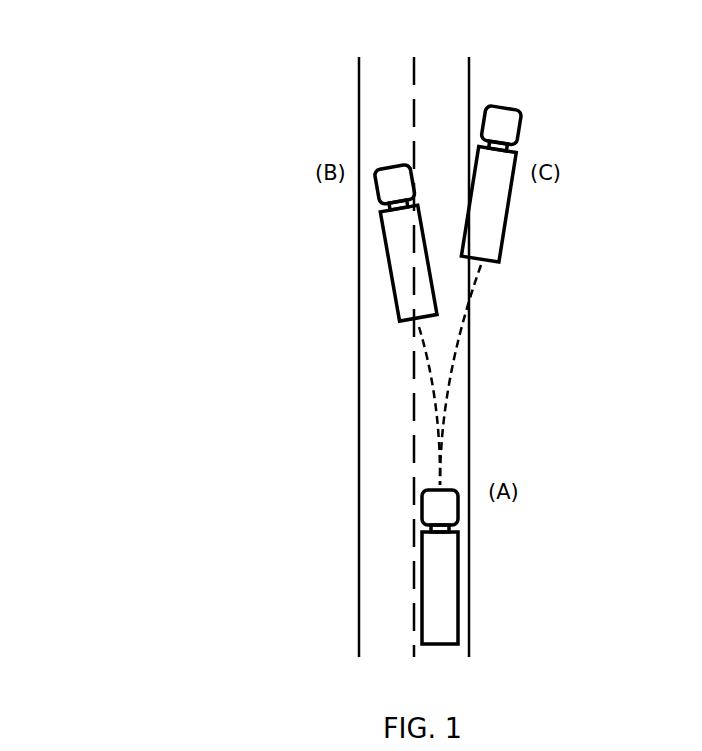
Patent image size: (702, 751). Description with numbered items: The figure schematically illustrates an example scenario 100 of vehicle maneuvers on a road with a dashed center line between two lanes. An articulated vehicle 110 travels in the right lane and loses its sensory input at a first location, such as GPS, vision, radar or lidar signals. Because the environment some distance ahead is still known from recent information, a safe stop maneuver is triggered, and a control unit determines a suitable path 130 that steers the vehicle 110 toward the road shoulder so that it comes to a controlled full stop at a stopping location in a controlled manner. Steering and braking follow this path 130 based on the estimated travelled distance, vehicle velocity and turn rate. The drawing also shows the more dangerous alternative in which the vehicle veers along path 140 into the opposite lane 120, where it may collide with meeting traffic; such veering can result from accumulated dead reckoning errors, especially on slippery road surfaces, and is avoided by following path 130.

The example scenario 100 is at (116, 63).
The articulated vehicle 110 is at (448, 591).
The opposite lane 120 is at (378, 448).
The path 130 is at (452, 375).
The veering path 140 is at (430, 363).